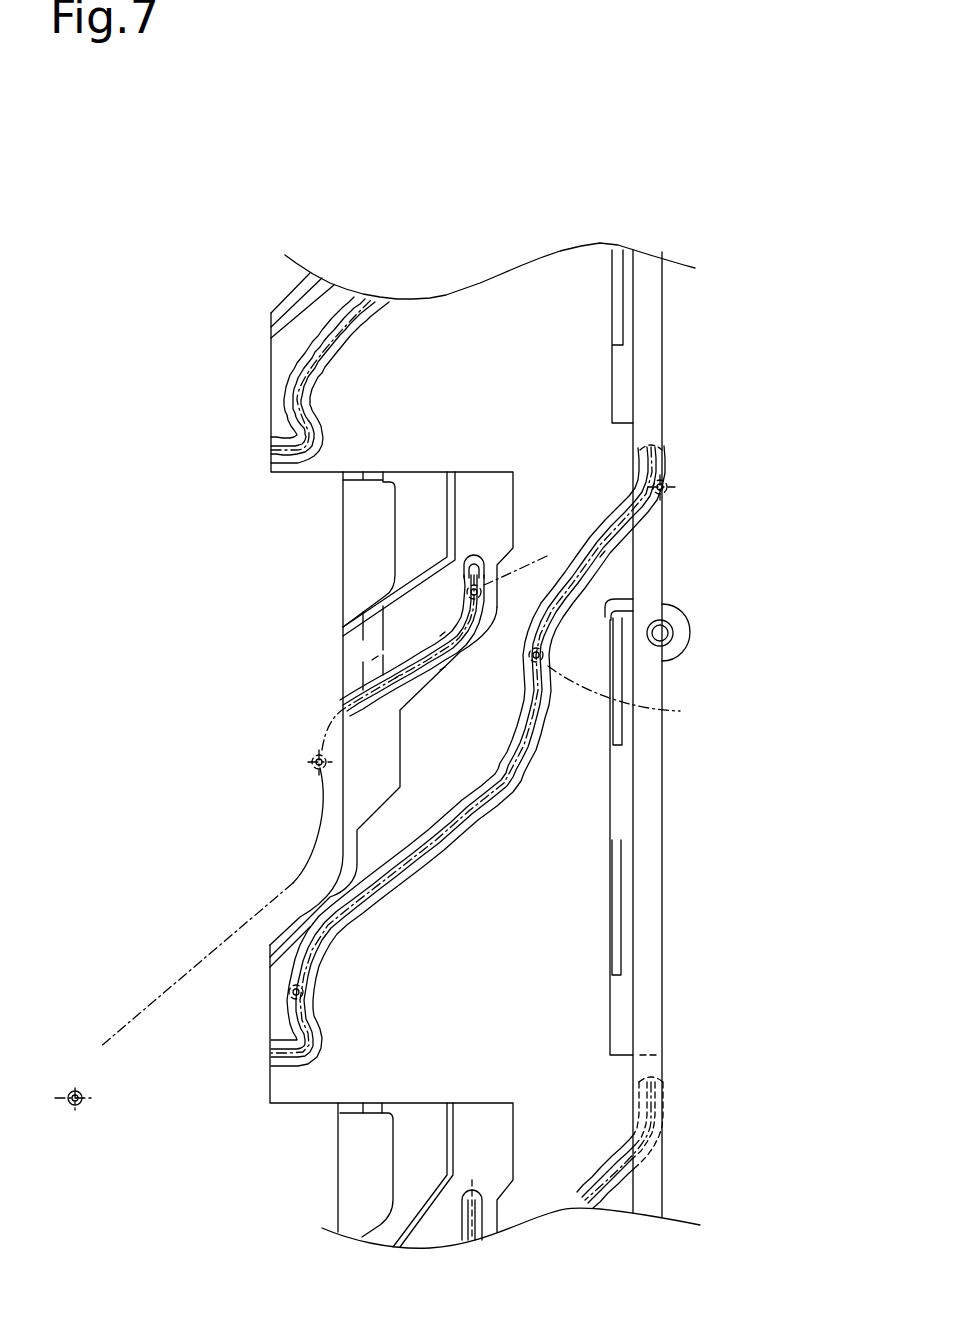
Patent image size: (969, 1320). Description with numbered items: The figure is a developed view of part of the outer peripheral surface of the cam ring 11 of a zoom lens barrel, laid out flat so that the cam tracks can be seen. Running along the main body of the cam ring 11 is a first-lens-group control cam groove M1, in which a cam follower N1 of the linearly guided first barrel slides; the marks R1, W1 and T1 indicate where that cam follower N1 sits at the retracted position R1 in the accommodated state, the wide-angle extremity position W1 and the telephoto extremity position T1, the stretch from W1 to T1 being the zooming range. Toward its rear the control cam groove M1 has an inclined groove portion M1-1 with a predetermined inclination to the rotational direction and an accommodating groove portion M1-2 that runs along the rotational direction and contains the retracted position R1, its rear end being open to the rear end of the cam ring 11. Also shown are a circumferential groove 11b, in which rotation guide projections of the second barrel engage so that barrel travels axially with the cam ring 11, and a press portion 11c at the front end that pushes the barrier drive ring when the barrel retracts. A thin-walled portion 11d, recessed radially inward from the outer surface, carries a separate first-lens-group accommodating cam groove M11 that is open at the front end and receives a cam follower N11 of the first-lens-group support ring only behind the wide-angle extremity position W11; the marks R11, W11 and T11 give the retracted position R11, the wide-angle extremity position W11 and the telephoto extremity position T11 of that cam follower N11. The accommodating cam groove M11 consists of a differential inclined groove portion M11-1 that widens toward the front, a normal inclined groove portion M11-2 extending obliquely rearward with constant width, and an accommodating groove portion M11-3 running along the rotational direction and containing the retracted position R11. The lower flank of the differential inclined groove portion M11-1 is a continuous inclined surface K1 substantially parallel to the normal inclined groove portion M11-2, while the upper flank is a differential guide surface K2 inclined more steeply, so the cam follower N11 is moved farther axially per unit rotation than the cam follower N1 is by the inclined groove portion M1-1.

The cam ring 11 is at (567, 277).
The circumferential groove 11b is at (625, 910).
The press portion 11c is at (475, 1150).
The thin-walled portion 11d is at (481, 507).
The first-lens-group control cam groove M1 is at (300, 373).
The inclined groove portion M1-1 is at (600, 557).
The accommodating groove portion M1-2 is at (650, 450).
The cam follower N1 is at (668, 480).
The retracted position R1 is at (680, 487).
The wide-angle extremity position W1 is at (520, 655).
The telephoto extremity position T1 is at (271, 992).
The first-lens-group accommodating cam groove M11 is at (357, 673).
The differential inclined groove portion M11-1 is at (395, 678).
The normal inclined groove portion M11-2 is at (445, 632).
The accommodating groove portion M11-3 is at (465, 578).
The continuous inclined surface K1 is at (440, 670).
The differential guide surface K2 is at (372, 660).
The cam follower N11 is at (75, 1088).
The retracted position R11 is at (484, 593).
The wide-angle extremity position W11 is at (308, 762).
The telephoto extremity position T11 is at (56, 1100).